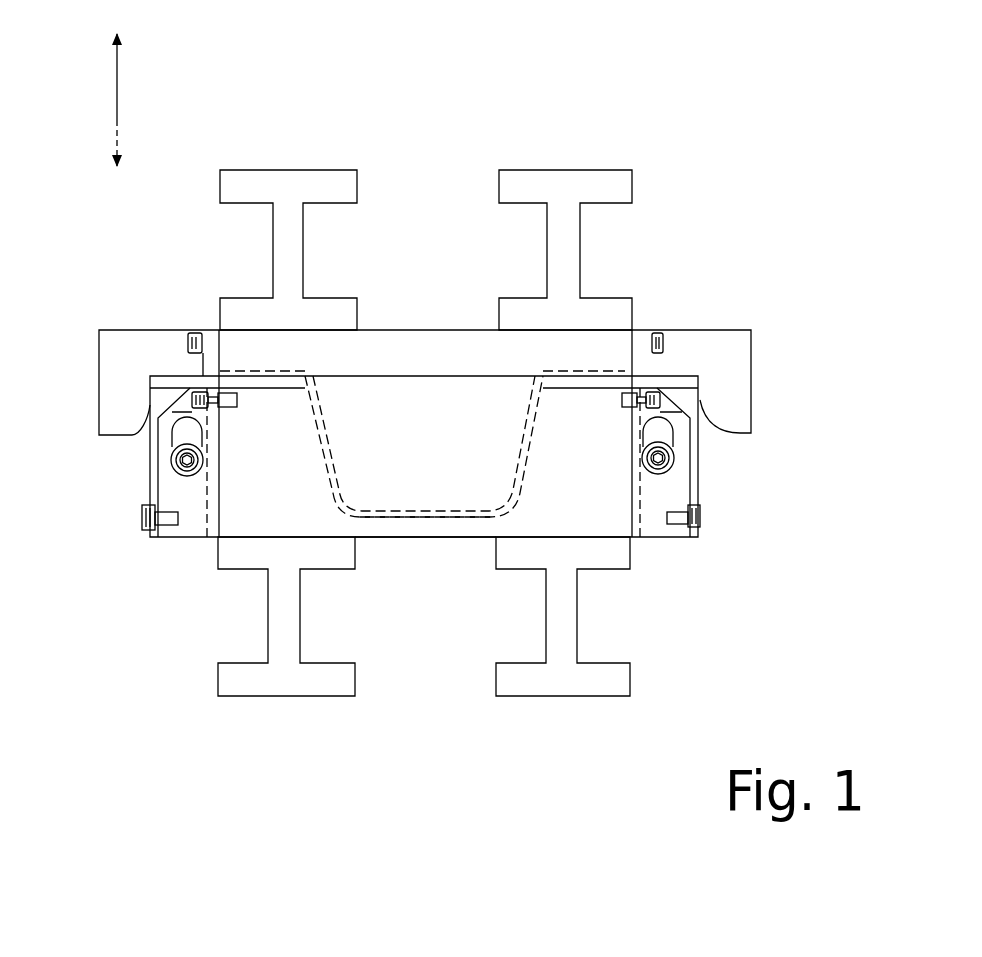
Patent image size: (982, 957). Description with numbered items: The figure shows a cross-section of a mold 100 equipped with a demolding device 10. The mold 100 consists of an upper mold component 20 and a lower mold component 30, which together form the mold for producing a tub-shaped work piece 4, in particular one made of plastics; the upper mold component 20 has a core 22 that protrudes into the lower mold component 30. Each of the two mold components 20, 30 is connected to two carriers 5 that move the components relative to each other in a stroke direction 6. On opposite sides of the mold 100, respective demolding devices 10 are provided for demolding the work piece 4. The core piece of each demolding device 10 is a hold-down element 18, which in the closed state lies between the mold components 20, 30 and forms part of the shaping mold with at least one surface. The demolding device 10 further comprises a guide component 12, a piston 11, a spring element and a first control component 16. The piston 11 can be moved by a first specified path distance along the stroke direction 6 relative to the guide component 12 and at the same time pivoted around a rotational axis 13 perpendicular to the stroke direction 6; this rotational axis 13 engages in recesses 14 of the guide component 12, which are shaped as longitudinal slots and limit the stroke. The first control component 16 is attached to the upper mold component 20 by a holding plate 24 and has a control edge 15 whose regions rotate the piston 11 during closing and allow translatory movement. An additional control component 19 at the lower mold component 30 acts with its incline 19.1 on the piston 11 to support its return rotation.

The mold 100 is at (760, 91).
The demolding device 10 is at (104, 303).
The stroke direction 6 is at (117, 120).
The carrier 5 is at (500, 174).
The core 22 is at (388, 447).
The upper mold component 20 is at (450, 343).
The hold-down element 18 is at (592, 381).
The holding plate 24 is at (648, 376).
The piston 11 is at (700, 400).
The first control component 16 is at (738, 350).
The control edge 15 is at (700, 418).
The recess 14 is at (663, 433).
The rotational axis 13 is at (673, 450).
The guide component 12 is at (673, 498).
The work piece 4 is at (333, 505).
The lower mold component 30 is at (417, 527).
The additional control component 19 is at (645, 520).
The incline 19.1 is at (643, 522).